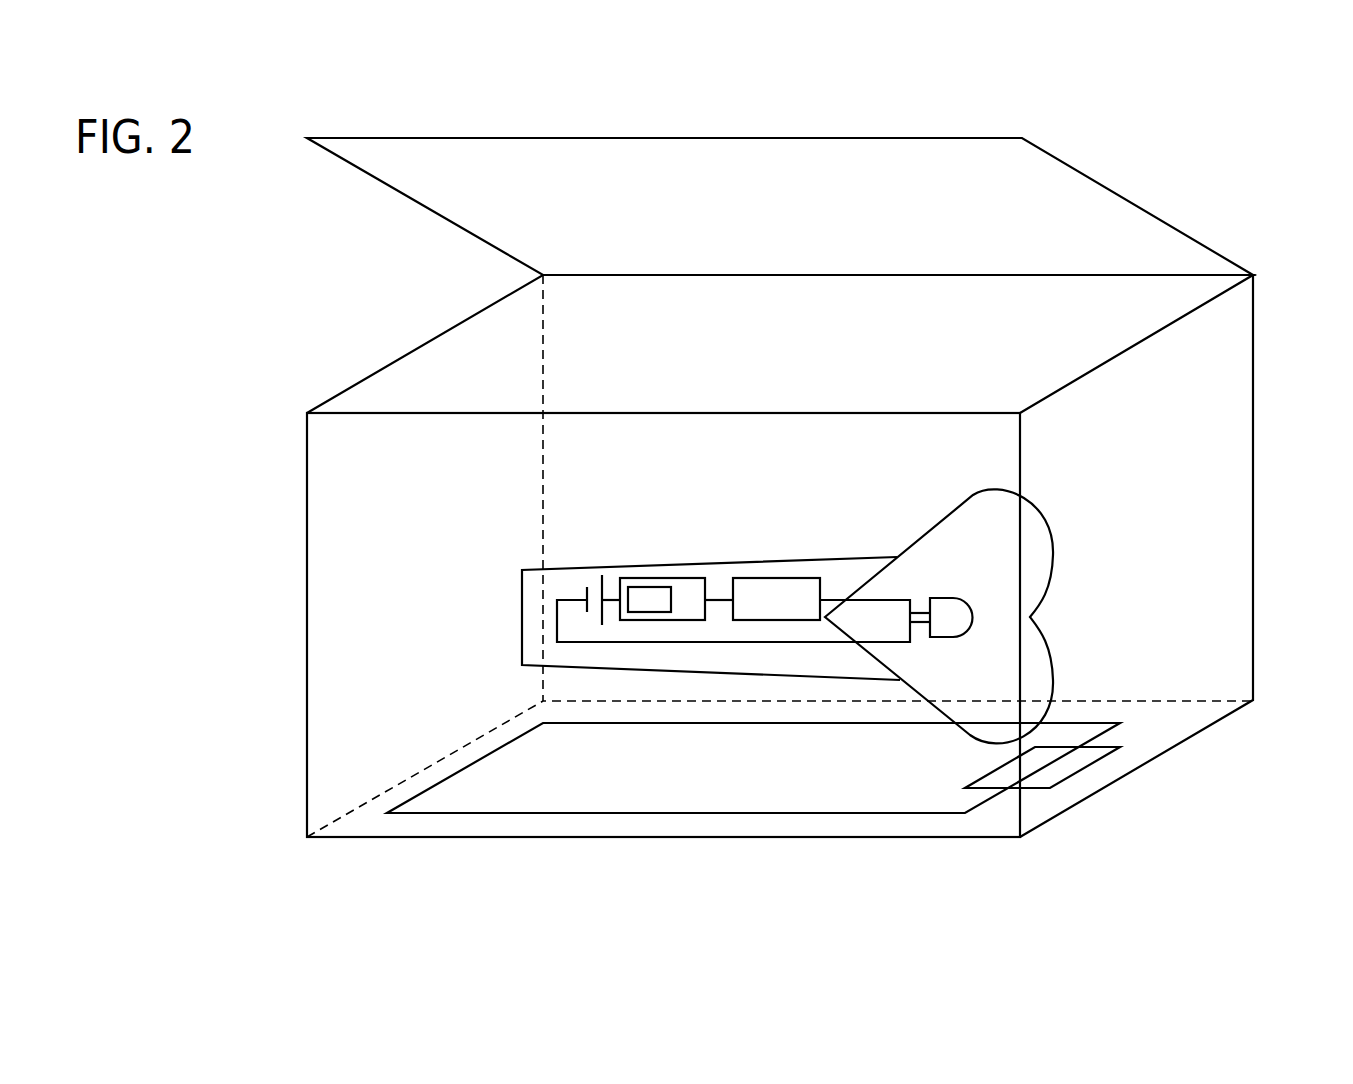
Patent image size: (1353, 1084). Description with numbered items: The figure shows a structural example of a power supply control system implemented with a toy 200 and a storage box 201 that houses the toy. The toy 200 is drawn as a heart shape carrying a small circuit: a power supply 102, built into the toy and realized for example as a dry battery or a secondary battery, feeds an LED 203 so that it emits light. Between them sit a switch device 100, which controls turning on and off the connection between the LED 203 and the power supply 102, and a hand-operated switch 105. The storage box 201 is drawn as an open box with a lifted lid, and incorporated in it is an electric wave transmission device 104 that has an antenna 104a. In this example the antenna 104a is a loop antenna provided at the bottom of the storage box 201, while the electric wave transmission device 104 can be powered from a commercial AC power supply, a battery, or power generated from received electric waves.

The storage box 201 is at (1157, 237).
The toy 200 is at (1040, 545).
The LED 203 is at (947, 607).
The switch device 100 is at (770, 592).
The hand-operated switch 105 is at (680, 590).
The power supply 102 is at (587, 592).
The electric wave transmission device 104 is at (1063, 767).
The antenna 104a is at (800, 814).